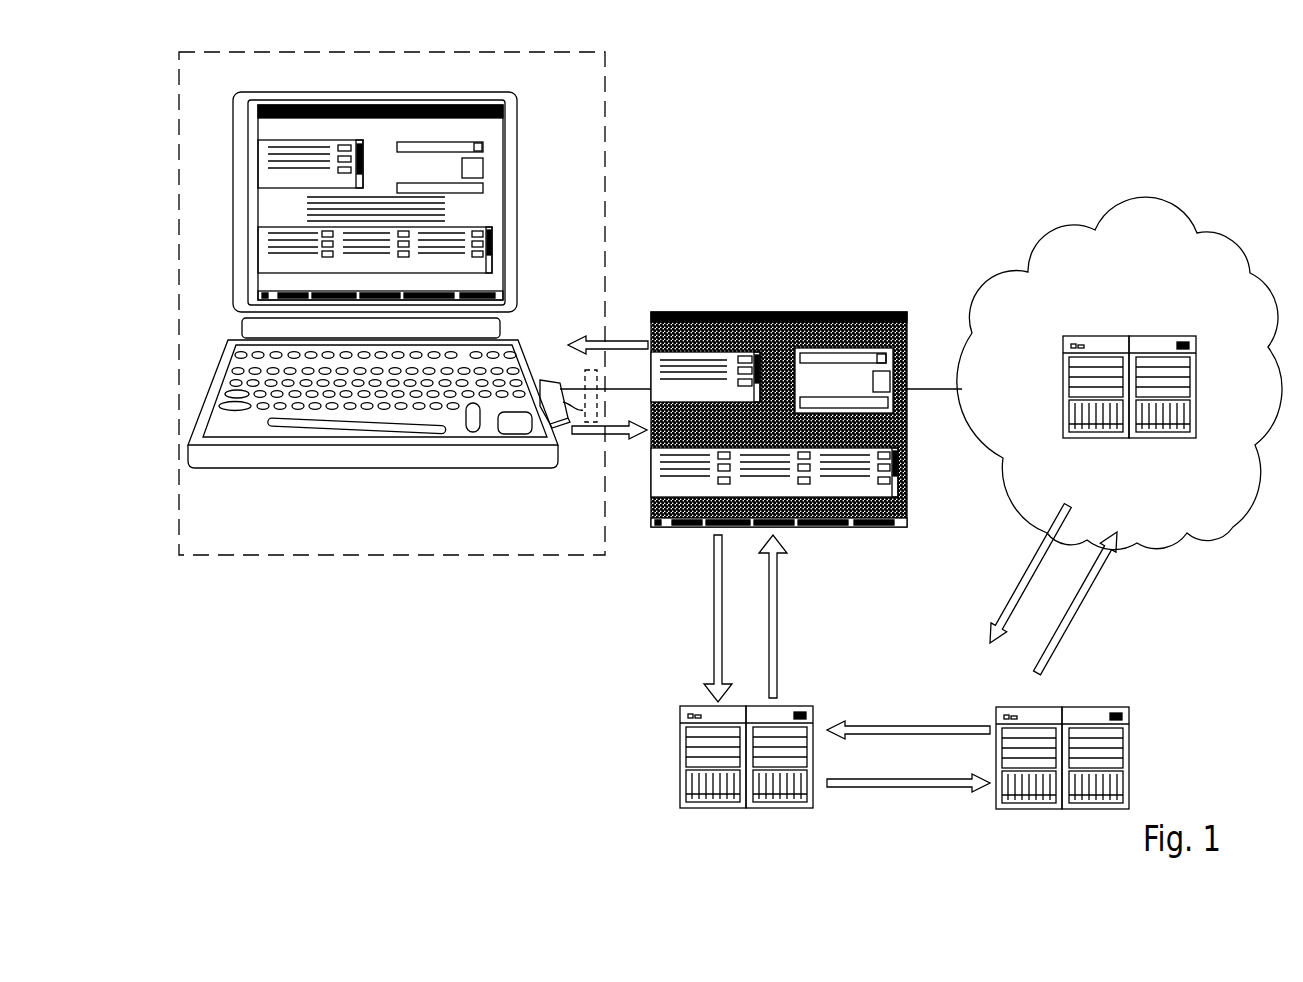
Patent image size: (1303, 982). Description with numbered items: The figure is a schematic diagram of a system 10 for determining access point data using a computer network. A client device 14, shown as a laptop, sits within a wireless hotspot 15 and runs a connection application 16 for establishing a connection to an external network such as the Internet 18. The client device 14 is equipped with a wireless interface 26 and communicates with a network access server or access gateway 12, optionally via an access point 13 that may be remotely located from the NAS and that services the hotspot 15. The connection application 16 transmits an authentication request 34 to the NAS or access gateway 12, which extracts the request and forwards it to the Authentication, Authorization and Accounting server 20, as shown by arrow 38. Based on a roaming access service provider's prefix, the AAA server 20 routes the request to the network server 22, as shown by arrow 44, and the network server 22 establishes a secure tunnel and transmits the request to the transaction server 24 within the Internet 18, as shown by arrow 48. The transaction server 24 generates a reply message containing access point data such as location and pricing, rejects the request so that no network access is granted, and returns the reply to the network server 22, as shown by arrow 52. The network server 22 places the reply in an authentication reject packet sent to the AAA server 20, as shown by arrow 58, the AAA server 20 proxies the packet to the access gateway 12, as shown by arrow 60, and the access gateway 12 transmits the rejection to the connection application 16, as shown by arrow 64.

The system 10 is at (660, 114).
The network access server (NAS) or access gateway 12 is at (823, 375).
The access point 13 is at (586, 411).
The client device 14 is at (373, 92).
The wireless hotspot 15 is at (369, 541).
The connection application 16 is at (307, 198).
The Internet 18 is at (1116, 521).
The Authentication, Authorization and Accounting (AAA) server 20 is at (640, 765).
The network server (NetServer) 22 is at (1160, 770).
The transaction server 24 is at (1150, 338).
The wireless interface 26 is at (545, 380).
The authentication request 34 is at (627, 440).
The arrow (transmission of authentication request to AAA server) 38 is at (718, 625).
The arrow (routing of authentication request to network server) 44 is at (922, 790).
The arrow (transmission of request to transaction server) 48 is at (1077, 613).
The arrow (transmission of reply message) 52 is at (1032, 563).
The arrow (transmission of authentication reject packet) 58 is at (922, 722).
The arrow (proxying of authentication reject packet) 60 is at (776, 623).
The arrow (transmission of authentication rejection) 64 is at (627, 340).